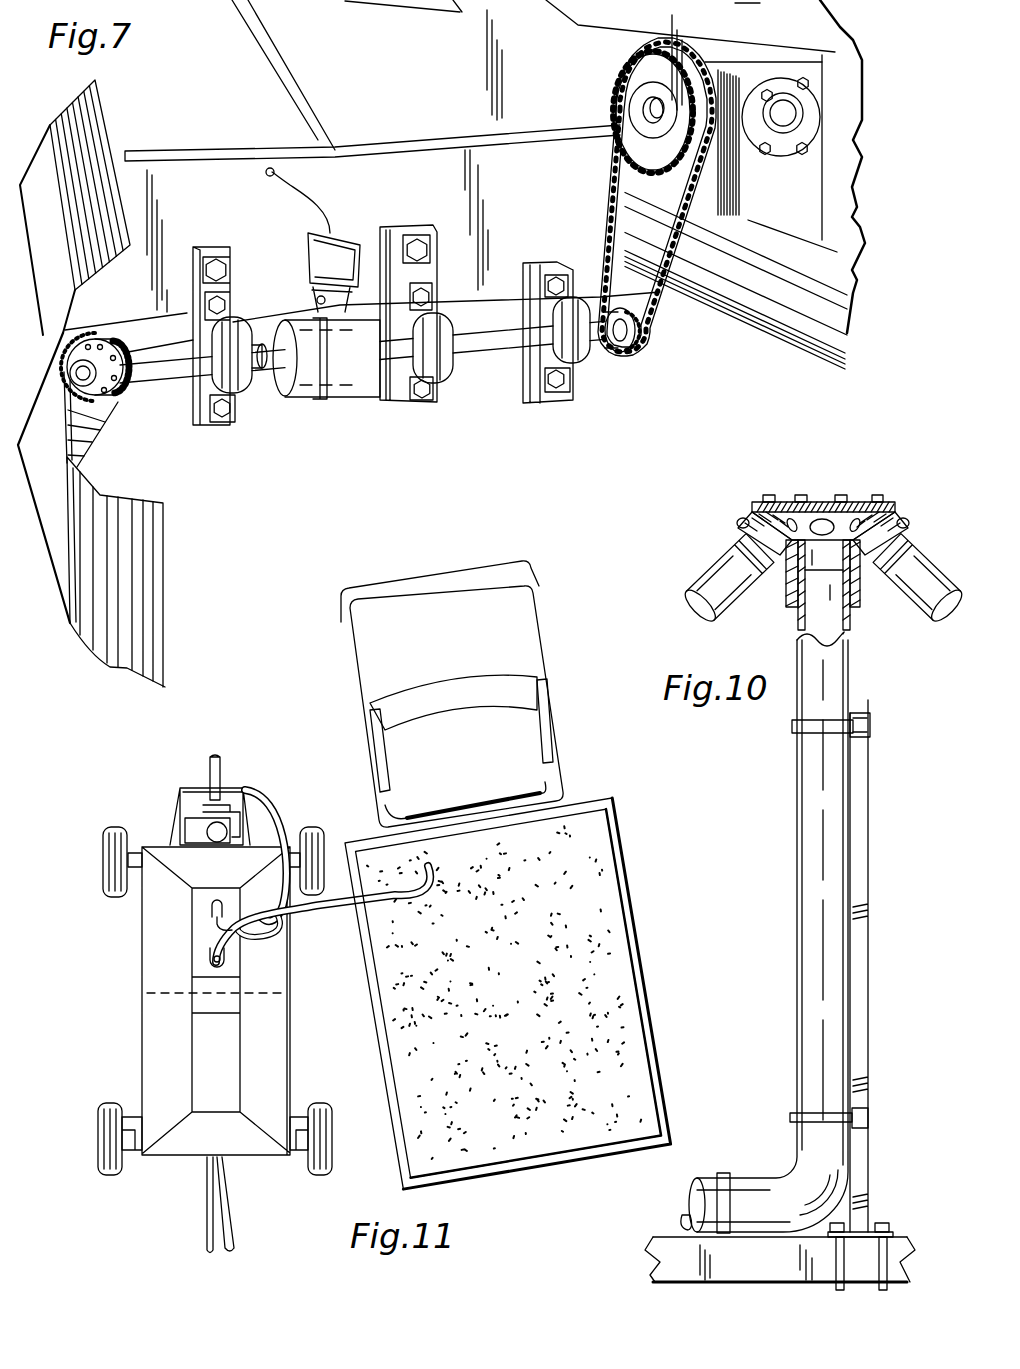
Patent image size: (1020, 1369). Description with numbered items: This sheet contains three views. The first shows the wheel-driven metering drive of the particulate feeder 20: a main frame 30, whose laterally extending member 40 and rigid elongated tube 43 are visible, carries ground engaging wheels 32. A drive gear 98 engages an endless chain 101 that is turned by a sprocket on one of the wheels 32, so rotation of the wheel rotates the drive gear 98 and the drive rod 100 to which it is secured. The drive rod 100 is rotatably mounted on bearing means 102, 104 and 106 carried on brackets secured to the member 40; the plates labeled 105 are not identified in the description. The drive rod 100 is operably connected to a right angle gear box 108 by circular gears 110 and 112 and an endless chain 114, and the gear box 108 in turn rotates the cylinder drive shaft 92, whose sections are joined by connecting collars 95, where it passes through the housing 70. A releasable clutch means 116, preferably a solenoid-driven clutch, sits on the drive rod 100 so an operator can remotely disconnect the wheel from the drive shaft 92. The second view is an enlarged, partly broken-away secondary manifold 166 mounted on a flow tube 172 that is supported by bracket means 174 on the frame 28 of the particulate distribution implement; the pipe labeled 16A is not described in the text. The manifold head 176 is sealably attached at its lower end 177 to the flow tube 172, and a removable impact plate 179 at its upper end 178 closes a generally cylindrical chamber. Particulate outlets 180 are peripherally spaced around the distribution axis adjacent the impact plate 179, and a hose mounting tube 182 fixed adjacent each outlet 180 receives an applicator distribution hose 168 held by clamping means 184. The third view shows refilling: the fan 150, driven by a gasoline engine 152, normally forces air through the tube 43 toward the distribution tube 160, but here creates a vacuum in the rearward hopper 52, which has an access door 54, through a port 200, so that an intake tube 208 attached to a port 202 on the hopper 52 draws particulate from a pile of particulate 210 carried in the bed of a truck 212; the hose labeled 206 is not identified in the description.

In FIG. 11, the particulate feeder 20 is at (130, 990).
In FIG. 10, the frame 28 is at (770, 1273).
In FIG. 7, the main frame 30 is at (728, 300).
In FIG. 7, the ground engaging wheels 32 is at (150, 545).
In FIG. 7, the laterally extending member 40 is at (362, 238).
In FIG. 7, the elongated tube 43 is at (806, 227).
In FIG. 11, the rearward hopper 52 is at (148, 940).
In FIG. 11, the access door 54 is at (200, 965).
In FIG. 7, the housing 70 is at (858, 155).
In FIG. 7, the cylinder drive shaft 92 is at (795, 110).
In FIG. 7, the connecting collars 95 is at (813, 113).
In FIG. 7, the drive gear 98 is at (105, 400).
In FIG. 7, the drive rod 100 is at (173, 384).
In FIG. 7, the endless chain 101 is at (93, 443).
In FIG. 7, the bearing means 102 is at (238, 392).
In FIG. 7, the bearing means 104 is at (442, 372).
In FIG. 7, the bearing mounting plate 105 is at (200, 425).
In FIG. 7, the bearing means 106 is at (583, 362).
In FIG. 7, the right angle gear box 108 is at (743, 170).
In FIG. 7, the circular gear 110 is at (640, 340).
In FIG. 7, the circular gear 112 is at (637, 150).
In FIG. 7, the endless chain 114 is at (658, 300).
In FIG. 7, the releasable clutch means 116 is at (290, 297).
In FIG. 11, the fan 150 is at (216, 752).
In FIG. 11, the gasoline engine 152 is at (187, 807).
In FIG. 11, the distribution tube 160 is at (227, 1210).
In FIG. 10, the secondary manifold 166 is at (795, 492).
In FIG. 10, the applicator distribution hoses 168 is at (702, 585).
In FIG. 10, the flow tube 172 is at (807, 853).
In FIG. 10, the bracket means 174 is at (857, 957).
In FIG. 10, the manifold head 176 is at (783, 610).
In FIG. 10, the lower end 177 is at (856, 608).
In FIG. 10, the upper end 178 is at (888, 502).
In FIG. 10, the impact plate 179 is at (845, 497).
In FIG. 10, the particulate outlets 180 is at (813, 502).
In FIG. 10, the hose mounting tube 182 is at (887, 530).
In FIG. 10, the clamping means 184 is at (915, 512).
In FIG. 10, the supply pipe 16A is at (703, 1187).
In FIG. 11, the port 200 is at (212, 910).
In FIG. 11, the port 202 is at (225, 958).
In FIG. 11, the hose 206 is at (262, 808).
In FIG. 11, the intake tube 208 is at (315, 908).
In FIG. 11, the pile of particulate 210 is at (592, 846).
In FIG. 11, the truck 212 is at (463, 640).